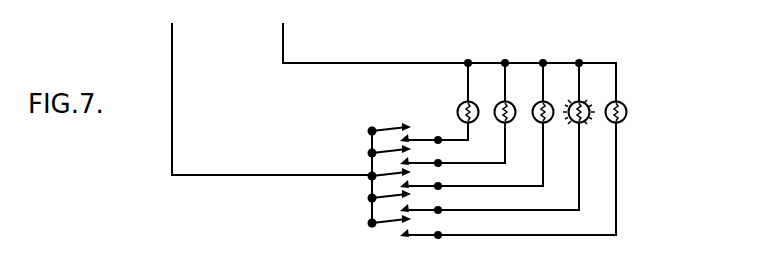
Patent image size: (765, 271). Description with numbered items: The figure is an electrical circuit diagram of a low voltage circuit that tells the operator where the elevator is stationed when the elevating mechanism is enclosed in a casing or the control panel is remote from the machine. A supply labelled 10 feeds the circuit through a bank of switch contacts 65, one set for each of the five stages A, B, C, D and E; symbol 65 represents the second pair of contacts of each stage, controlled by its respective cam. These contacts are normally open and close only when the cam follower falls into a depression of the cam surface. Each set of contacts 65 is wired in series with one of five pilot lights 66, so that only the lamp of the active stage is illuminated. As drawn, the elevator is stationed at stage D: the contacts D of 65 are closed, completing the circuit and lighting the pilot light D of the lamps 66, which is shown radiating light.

The 10 volt supply 10 is at (394, 96).
The second pair of contacts 65 is at (396, 124).
The pilot lights 66 is at (627, 110).